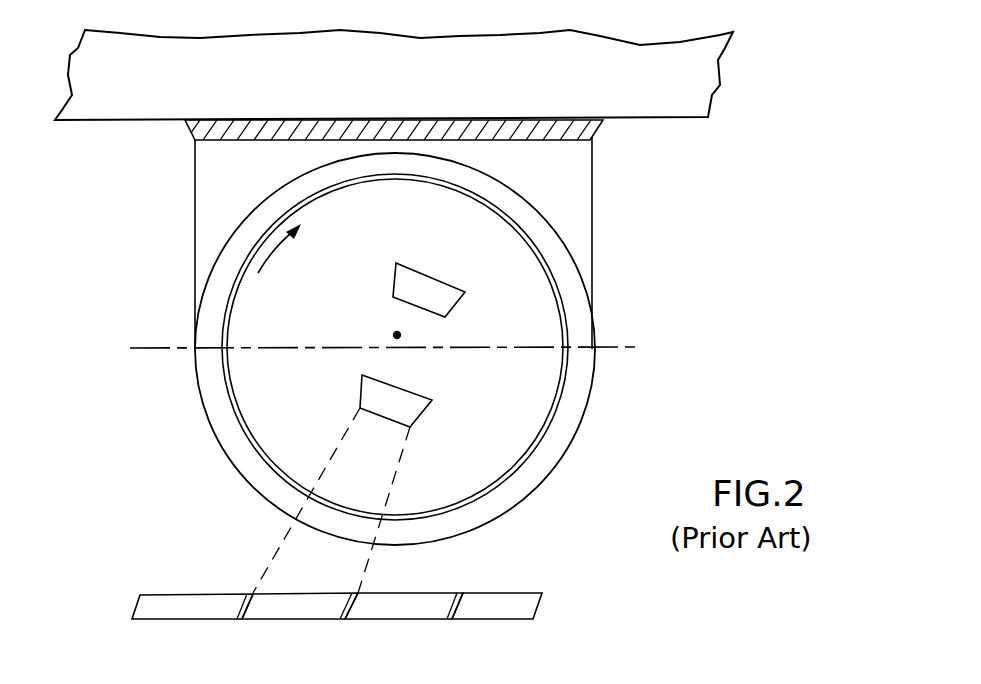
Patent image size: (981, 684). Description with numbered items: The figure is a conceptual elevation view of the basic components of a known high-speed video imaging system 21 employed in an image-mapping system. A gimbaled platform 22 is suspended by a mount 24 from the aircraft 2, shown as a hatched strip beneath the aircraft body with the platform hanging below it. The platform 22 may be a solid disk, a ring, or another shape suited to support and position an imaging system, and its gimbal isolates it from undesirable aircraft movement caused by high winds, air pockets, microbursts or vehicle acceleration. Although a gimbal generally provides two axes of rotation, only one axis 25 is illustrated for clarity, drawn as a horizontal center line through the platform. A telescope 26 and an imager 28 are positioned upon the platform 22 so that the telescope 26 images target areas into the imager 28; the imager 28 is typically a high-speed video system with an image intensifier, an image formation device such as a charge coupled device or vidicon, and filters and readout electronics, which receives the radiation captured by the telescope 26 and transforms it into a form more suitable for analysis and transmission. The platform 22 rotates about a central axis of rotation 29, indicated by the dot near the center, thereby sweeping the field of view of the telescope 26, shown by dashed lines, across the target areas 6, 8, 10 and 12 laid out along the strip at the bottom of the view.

The aircraft 2 is at (690, 136).
The mount 24 is at (194, 140).
The imaging system 21 is at (123, 125).
The gimbaled platform 22 is at (233, 410).
The axis 25 is at (623, 347).
The imager 28 is at (389, 273).
The central axis of rotation 29 is at (394, 335).
The telescope 26 is at (350, 393).
The target area 12 is at (181, 620).
The target area 10 is at (302, 620).
The target area 8 is at (404, 620).
The target area 6 is at (491, 620).